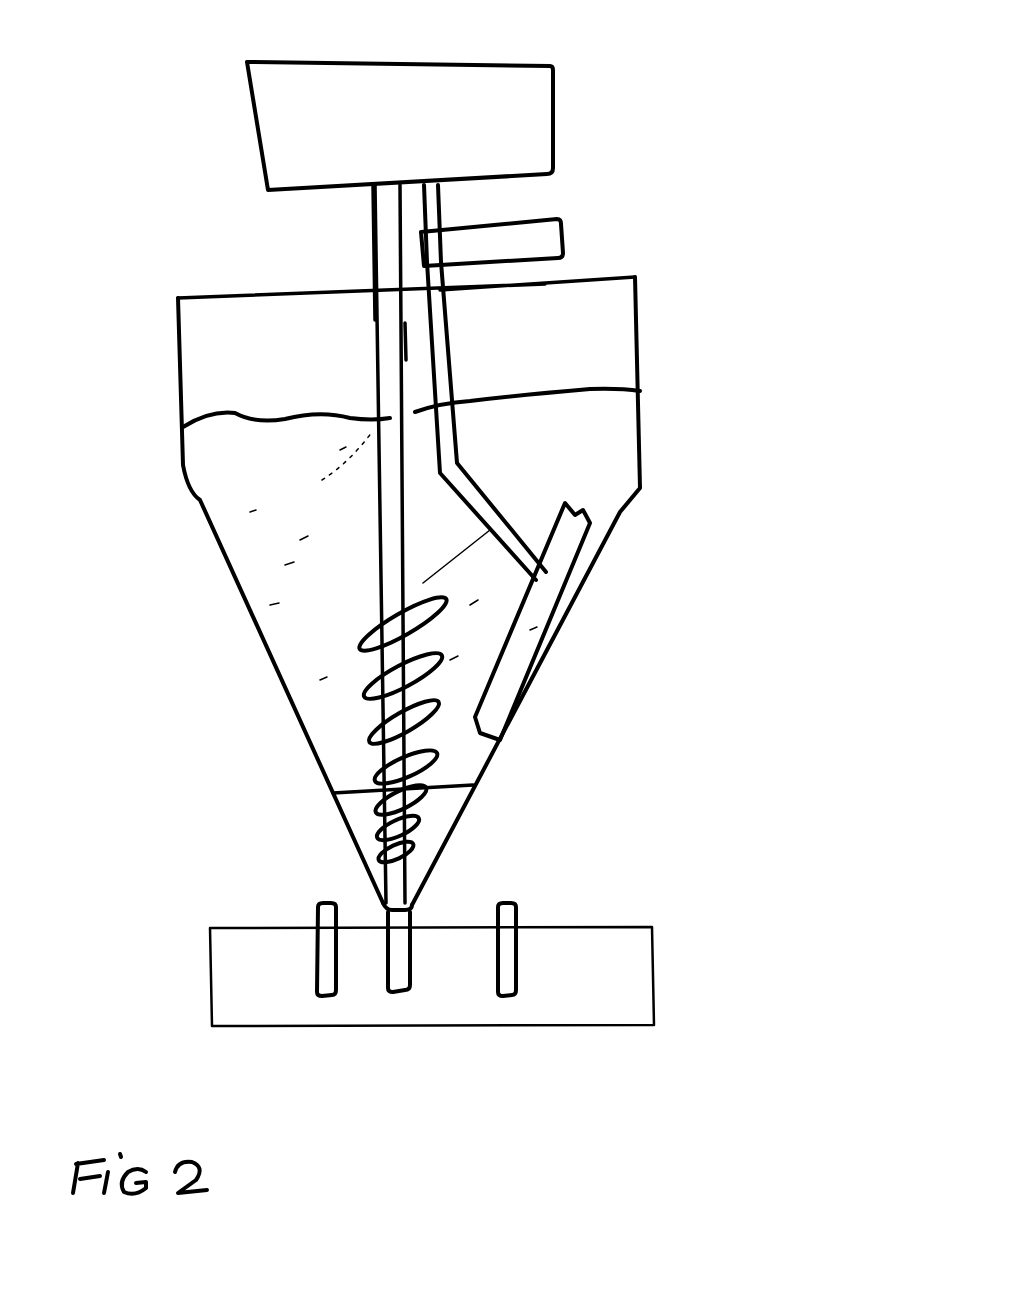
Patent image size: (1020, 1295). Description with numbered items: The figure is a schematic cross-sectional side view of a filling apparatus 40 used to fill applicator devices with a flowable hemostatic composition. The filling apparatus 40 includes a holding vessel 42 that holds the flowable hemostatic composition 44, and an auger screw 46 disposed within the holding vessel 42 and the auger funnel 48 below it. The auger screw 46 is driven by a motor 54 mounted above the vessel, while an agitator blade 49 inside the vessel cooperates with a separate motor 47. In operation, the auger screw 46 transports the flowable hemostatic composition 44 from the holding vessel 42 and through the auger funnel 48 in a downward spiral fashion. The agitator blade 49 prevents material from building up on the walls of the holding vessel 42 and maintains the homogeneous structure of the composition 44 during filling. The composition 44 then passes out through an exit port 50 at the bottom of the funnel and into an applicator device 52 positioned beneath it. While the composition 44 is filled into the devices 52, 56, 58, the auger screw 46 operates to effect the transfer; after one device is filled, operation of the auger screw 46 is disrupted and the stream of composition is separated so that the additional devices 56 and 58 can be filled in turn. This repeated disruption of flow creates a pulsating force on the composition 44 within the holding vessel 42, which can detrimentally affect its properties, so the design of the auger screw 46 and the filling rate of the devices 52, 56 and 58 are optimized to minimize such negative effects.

The filling apparatus 40 is at (650, 234).
The holding vessel 42 is at (645, 347).
The flowable hemostatic composition 44 is at (567, 443).
The auger screw 46 is at (466, 641).
The motor 47 is at (555, 220).
The auger funnel 48 is at (457, 823).
The agitator blade 49 is at (517, 537).
The exit port 50 is at (420, 912).
The applicator device 52 is at (407, 990).
The motor 54 is at (515, 95).
The applicator device 56 is at (508, 997).
The applicator device 58 is at (328, 997).